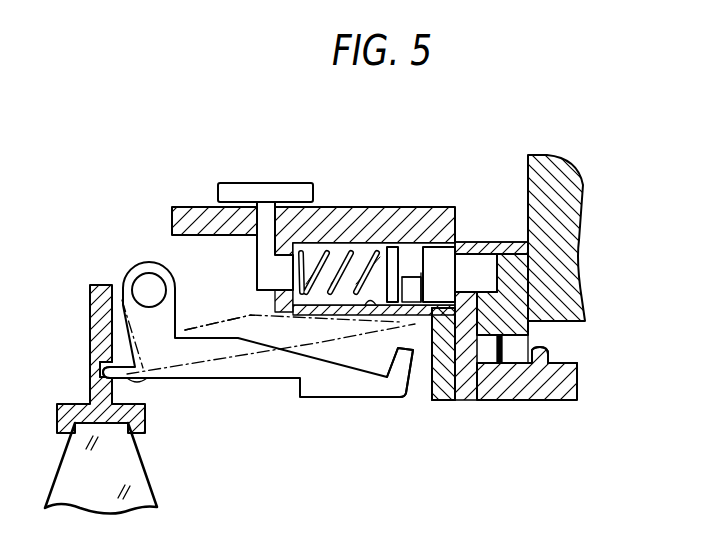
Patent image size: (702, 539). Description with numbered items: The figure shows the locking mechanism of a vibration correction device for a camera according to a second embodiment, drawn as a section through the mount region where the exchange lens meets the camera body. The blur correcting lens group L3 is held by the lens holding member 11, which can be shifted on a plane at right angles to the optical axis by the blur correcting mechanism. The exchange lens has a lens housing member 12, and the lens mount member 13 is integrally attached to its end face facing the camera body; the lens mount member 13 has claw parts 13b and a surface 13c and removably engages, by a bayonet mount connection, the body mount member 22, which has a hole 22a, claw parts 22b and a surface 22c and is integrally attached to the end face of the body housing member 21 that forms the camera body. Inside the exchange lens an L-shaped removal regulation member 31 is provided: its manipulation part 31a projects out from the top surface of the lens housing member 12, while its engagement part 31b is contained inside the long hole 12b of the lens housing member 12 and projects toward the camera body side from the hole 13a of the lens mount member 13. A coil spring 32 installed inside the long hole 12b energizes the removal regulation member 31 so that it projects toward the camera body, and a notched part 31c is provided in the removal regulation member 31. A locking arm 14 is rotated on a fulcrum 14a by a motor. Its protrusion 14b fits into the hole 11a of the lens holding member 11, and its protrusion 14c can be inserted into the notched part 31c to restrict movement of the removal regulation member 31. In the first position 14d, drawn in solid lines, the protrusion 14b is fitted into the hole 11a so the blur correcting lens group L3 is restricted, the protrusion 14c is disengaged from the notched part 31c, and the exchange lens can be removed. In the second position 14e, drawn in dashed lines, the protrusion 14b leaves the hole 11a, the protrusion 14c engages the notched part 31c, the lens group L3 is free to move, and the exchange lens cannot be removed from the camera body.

The lens holding member 11 is at (90, 320).
The hole 11a is at (92, 362).
The lens housing member 12 is at (348, 225).
The long hole 12b is at (367, 305).
The lens mount member 13 is at (568, 403).
The hole 13a is at (462, 400).
The claw parts 13b is at (532, 350).
The surface 13c is at (527, 350).
The locking arm 14 is at (250, 367).
The fulcrum 14a is at (147, 287).
The protrusion 14b is at (103, 371).
The protrusion 14c is at (403, 394).
The first position 14d is at (176, 380).
The second position 14e is at (241, 315).
The body housing member 21 is at (565, 218).
The body mount member 22 is at (507, 317).
The hole 22a is at (513, 250).
The claw parts 22b is at (568, 365).
The surface 22c is at (478, 312).
The removal regulation member 31 is at (264, 271).
The manipulation part 31a is at (268, 199).
The engagement part 31b is at (472, 265).
The notched part 31c is at (413, 275).
The coil spring 32 is at (335, 300).
The blur correcting lens group L3 is at (126, 470).